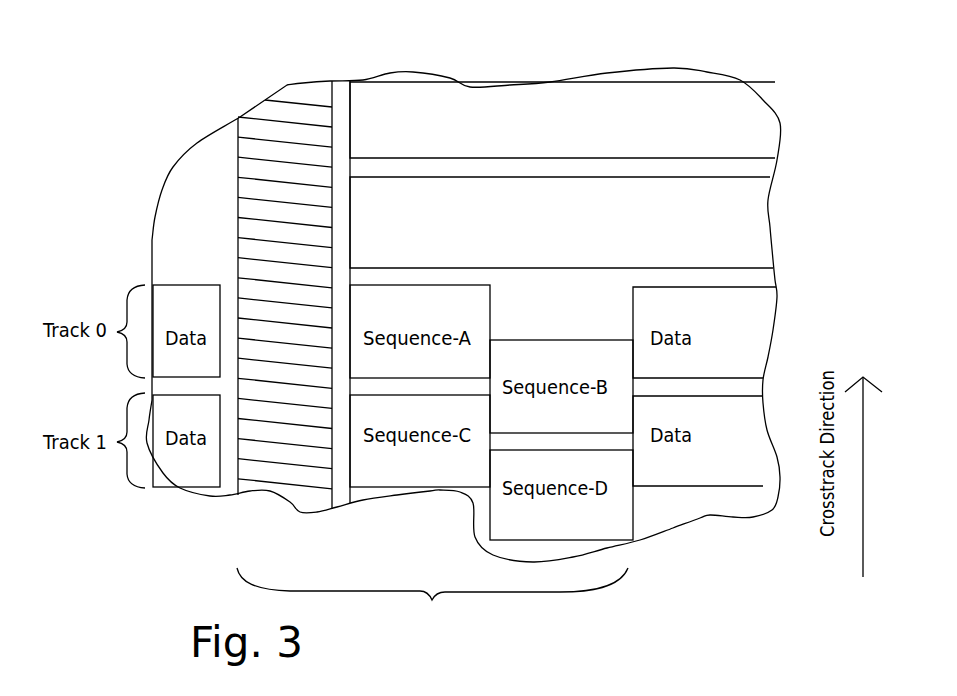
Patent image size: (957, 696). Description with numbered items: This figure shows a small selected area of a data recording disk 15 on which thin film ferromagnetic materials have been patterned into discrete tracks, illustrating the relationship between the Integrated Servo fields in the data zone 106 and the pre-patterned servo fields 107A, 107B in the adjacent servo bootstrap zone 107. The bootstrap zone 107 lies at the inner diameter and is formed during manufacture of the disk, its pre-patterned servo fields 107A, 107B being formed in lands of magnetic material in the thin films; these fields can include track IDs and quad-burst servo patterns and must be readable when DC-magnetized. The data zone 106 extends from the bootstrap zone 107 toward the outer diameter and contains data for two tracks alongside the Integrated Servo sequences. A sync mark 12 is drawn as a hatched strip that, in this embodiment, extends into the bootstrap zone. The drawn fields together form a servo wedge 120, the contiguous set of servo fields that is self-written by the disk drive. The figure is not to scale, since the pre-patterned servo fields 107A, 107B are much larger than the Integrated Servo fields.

The data recording disk 15 is at (278, 88).
The sync mark 12 is at (297, 500).
The data zone 106 is at (773, 330).
The servo bootstrap zone 107 is at (616, 175).
The pre-patterned servo field 107A is at (762, 260).
The pre-patterned servo field 107B is at (762, 150).
The servo wedge 120 is at (432, 611).